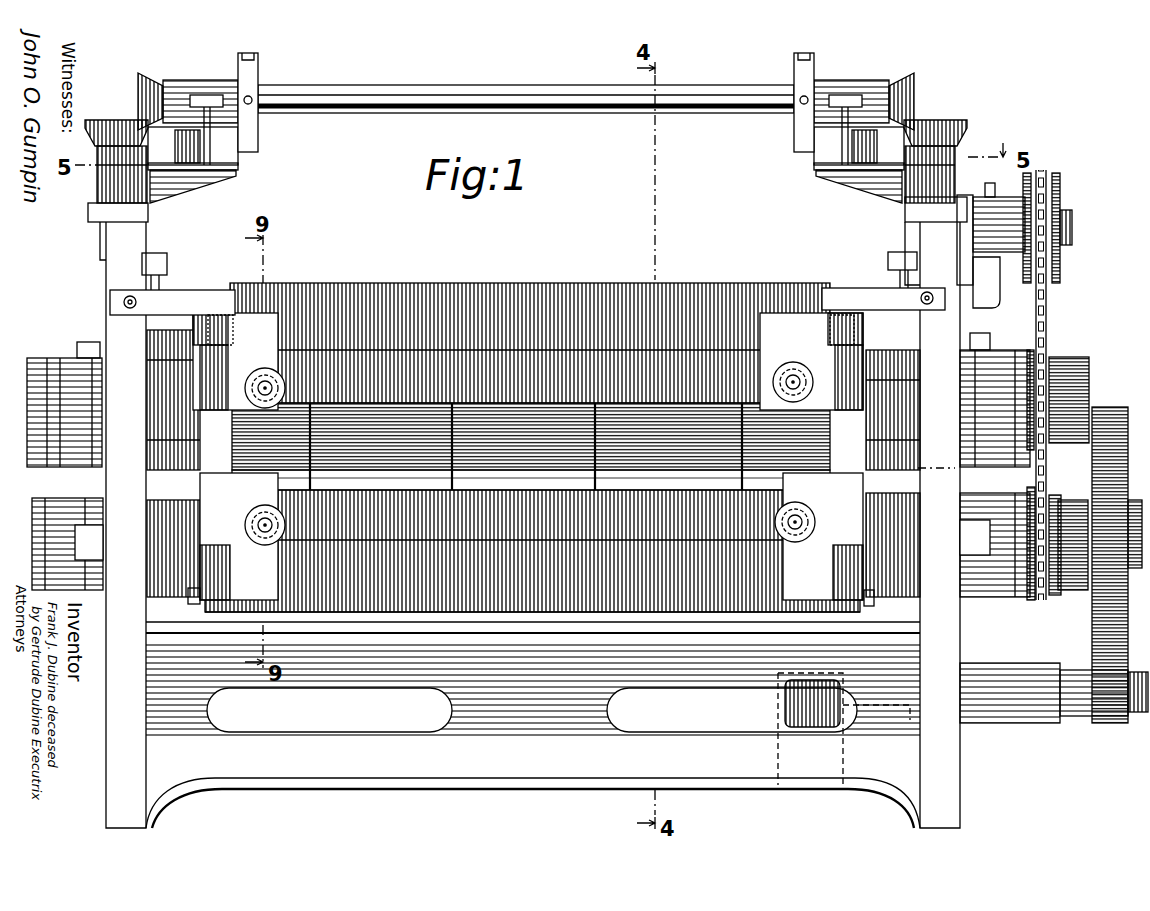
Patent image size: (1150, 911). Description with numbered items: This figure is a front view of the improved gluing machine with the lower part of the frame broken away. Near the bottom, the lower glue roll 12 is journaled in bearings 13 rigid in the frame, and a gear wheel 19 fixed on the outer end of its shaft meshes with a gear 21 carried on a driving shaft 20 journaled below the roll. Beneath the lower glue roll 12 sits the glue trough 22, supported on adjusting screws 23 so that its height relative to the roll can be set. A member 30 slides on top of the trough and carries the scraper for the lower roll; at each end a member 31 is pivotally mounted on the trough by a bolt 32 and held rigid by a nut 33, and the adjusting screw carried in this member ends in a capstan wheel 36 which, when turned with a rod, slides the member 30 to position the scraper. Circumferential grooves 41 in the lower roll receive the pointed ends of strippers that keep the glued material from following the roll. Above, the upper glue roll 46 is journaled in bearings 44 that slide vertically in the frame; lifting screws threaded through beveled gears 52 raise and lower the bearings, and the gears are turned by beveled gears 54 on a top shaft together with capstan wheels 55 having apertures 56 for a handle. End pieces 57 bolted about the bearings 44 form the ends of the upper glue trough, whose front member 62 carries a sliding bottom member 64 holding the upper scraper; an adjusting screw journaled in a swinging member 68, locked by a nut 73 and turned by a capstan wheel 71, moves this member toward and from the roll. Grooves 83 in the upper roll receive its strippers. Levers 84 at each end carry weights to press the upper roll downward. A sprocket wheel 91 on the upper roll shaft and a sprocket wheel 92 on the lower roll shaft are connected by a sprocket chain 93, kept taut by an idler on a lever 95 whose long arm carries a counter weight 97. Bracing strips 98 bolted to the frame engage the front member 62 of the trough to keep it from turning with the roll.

The lower glue roll 12 is at (610, 490).
The bearings 13 is at (65, 523).
The gear wheel 19 is at (1100, 415).
The driving shaft 20 is at (1142, 713).
The gear 21 is at (1117, 707).
The glue trough 22 is at (450, 583).
The adjusting screws 23 is at (828, 628).
The member 30 is at (385, 537).
The member 31 is at (268, 577).
The bolt 32 is at (868, 606).
The nut 33 is at (193, 595).
The capstan wheel 36 is at (288, 525).
The circumferential grooves 41 is at (453, 486).
The bearings 44 is at (95, 385).
The upper glue roll 46 is at (462, 423).
The beveled gears 52 is at (112, 120).
The beveled gear 54 is at (138, 85).
The capstan wheels 55 is at (262, 134).
The apertures 56 is at (250, 100).
The end pieces 57 is at (217, 372).
The front member 62 is at (565, 305).
The member 64 is at (530, 367).
The swinging member 68 is at (268, 345).
The capstan wheel 71 is at (287, 390).
The nut 73 is at (212, 312).
The grooves 83 is at (598, 427).
The levers 84 is at (155, 260).
The sprocket wheel 91 is at (1038, 392).
The sprocket wheel 92 is at (1040, 507).
The sprocket chain 93 is at (1047, 312).
The lever 95 is at (987, 217).
The counter weight 97 is at (990, 285).
The bracing strips 98 is at (200, 298).